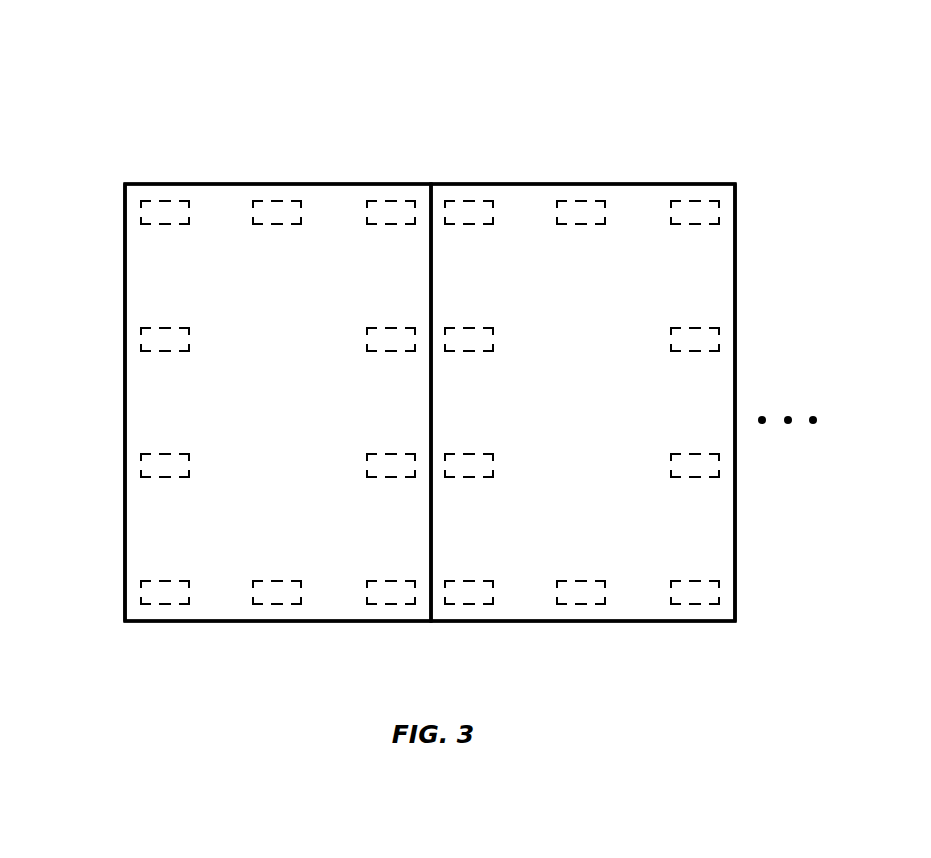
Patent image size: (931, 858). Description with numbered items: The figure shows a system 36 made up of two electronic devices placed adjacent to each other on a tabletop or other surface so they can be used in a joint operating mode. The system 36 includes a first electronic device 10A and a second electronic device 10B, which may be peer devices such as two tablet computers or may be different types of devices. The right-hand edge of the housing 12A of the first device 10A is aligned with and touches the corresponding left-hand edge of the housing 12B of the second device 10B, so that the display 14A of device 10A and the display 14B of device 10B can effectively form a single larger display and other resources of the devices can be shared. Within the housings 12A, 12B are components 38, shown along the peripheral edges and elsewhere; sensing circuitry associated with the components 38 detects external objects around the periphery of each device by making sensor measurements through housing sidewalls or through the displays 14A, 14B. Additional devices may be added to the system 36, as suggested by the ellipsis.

The system 36 is at (543, 58).
The first electronic device 10A is at (312, 184).
The second electronic device 10B is at (567, 184).
The housing 12A is at (125, 293).
The housing 12B is at (735, 283).
The display 14A is at (242, 551).
The display 14B is at (632, 551).
The components 38 is at (273, 225).